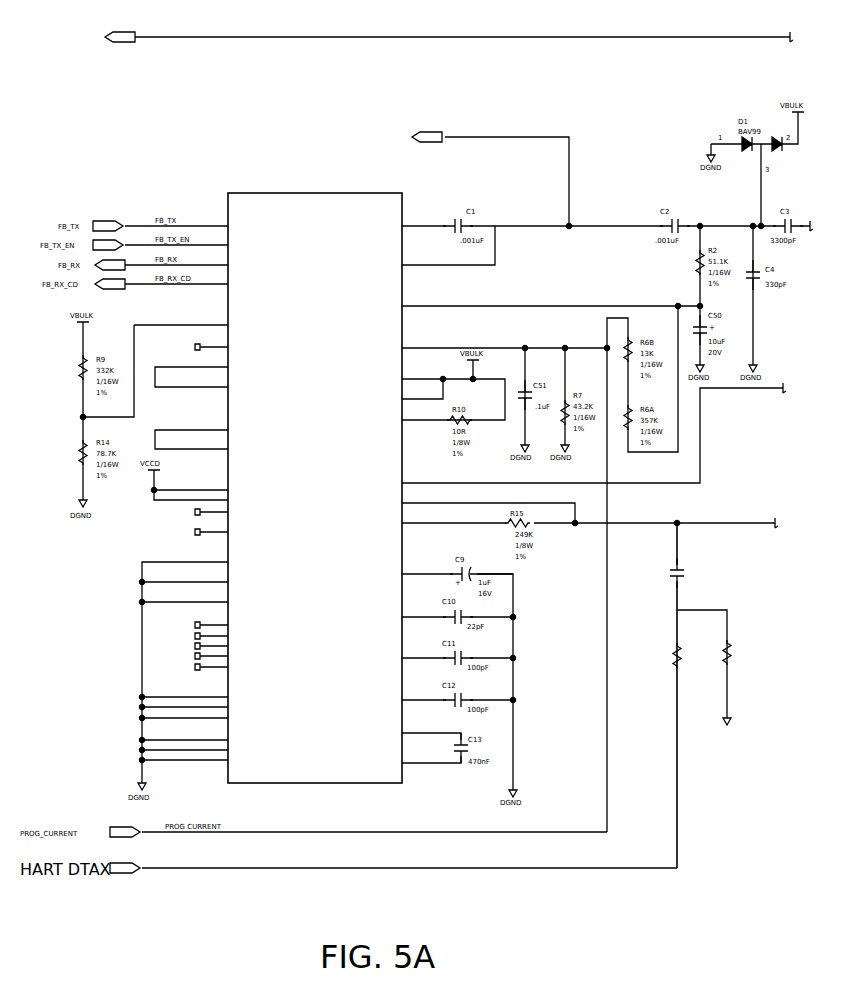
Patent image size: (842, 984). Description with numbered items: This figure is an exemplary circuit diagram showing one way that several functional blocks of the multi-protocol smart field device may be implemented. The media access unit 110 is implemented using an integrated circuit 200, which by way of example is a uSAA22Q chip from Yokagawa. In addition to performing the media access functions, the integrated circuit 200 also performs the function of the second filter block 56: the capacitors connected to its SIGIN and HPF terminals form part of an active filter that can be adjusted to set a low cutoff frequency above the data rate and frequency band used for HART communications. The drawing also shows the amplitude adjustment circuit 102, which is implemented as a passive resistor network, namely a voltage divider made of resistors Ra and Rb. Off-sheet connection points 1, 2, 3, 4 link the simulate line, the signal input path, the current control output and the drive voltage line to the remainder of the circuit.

The simulate line terminal 1 is at (425, 26).
The signal input terminal 2 is at (811, 209).
The current control output terminal 3 is at (594, 422).
The drive voltage terminal 4 is at (590, 511).
The second filter block 56 is at (580, 217).
The media access unit 110 is at (438, 112).
The integrated circuit 200 is at (380, 193).
The amplitude adjustment circuit 102 is at (740, 625).